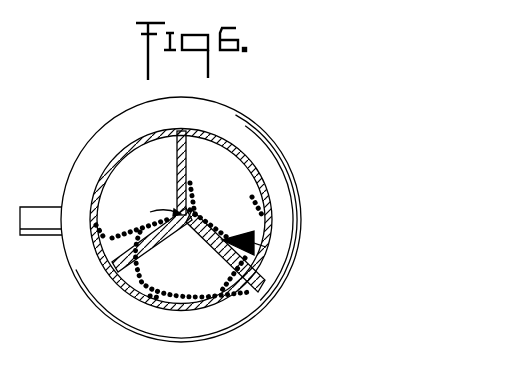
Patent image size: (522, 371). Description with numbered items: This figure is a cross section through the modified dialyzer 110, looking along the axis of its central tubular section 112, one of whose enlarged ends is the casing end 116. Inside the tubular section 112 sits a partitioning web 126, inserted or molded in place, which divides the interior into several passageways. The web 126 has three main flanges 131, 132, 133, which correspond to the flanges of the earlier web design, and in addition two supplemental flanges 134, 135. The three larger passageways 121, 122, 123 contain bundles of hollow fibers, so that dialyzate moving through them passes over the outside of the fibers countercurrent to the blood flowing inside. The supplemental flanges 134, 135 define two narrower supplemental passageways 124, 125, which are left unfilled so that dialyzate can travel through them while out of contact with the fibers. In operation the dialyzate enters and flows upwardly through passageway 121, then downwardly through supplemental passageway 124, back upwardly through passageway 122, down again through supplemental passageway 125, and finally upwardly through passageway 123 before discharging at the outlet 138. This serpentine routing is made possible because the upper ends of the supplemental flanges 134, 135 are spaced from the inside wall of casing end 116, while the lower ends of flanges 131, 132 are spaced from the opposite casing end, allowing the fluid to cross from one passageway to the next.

The dialyzer 110 is at (297, 160).
The central tubular section 112 is at (243, 152).
The enlarged end 116 is at (100, 132).
The passageway 121 is at (228, 175).
The passageway 122 is at (184, 272).
The passageway 123 is at (130, 178).
The supplemental passageway 124 is at (263, 248).
The supplemental passageway 125 is at (120, 266).
The partitioning web 126 is at (147, 207).
The flange 131 is at (262, 296).
The flange 132 is at (108, 241).
The flange 133 is at (206, 132).
The supplemental flange 134 is at (270, 194).
The supplemental flange 135 is at (143, 295).
The outlet 138 is at (33, 207).